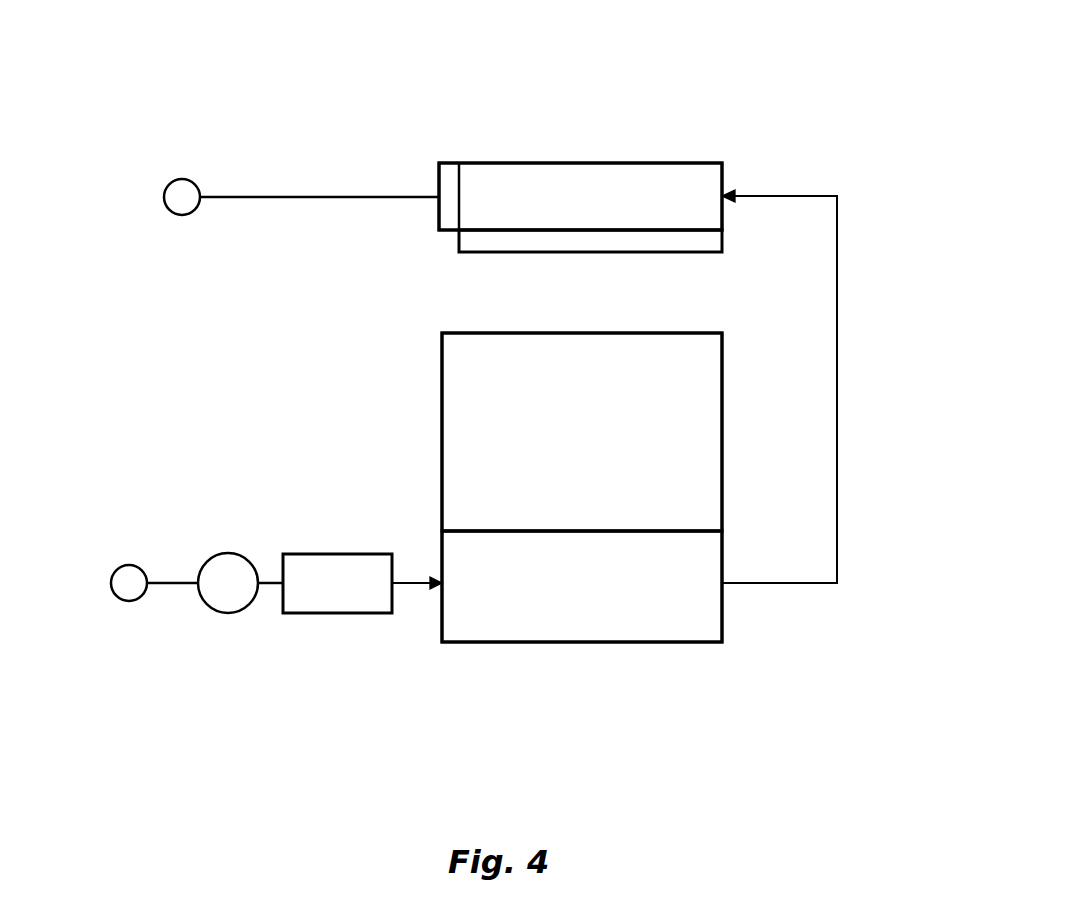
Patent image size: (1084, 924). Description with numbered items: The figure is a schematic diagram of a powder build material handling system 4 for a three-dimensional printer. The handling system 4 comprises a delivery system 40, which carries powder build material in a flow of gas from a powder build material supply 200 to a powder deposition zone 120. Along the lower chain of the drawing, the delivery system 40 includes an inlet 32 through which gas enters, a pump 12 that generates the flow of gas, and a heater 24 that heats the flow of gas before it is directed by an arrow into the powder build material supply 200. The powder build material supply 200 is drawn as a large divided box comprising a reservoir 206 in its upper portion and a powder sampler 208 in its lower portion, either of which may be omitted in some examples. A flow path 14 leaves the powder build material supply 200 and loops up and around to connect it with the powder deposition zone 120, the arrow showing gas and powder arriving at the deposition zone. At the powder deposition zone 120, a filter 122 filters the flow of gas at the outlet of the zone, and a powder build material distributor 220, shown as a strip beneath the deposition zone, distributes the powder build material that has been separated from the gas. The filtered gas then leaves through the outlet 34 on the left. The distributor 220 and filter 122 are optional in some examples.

The powder build material handling system 4 is at (265, 95).
The powder deposition zone 120 is at (620, 163).
The filter 122 is at (452, 163).
The powder build material distributor 220 is at (722, 240).
The outlet 34 is at (172, 213).
The flow path 14 is at (837, 428).
The powder build material supply 200 is at (640, 642).
The reservoir 206 is at (722, 493).
The powder sampler 208 is at (722, 610).
The inlet 32 is at (117, 602).
The pump 12 is at (210, 609).
The heater 24 is at (300, 613).
The delivery system 40 is at (401, 665).